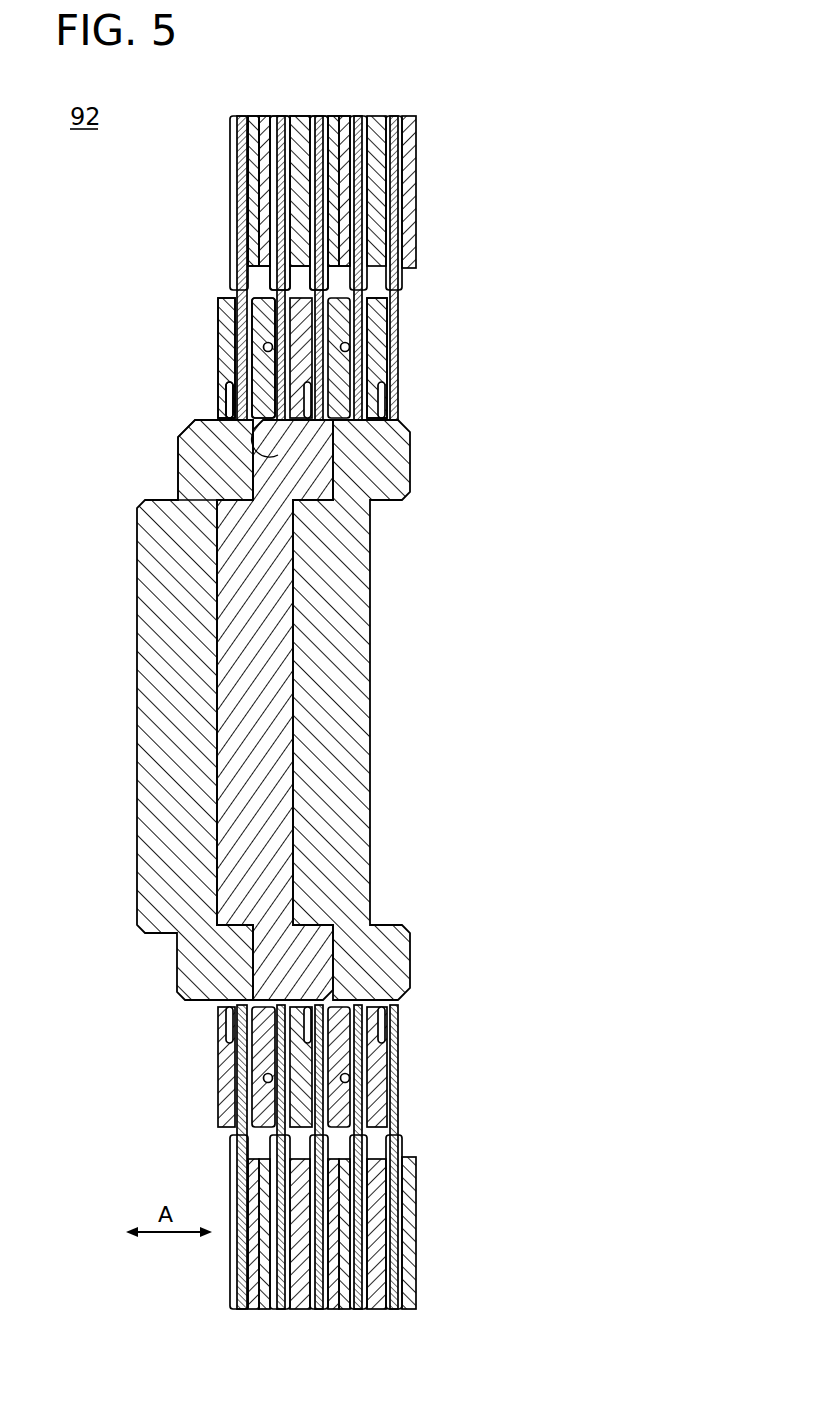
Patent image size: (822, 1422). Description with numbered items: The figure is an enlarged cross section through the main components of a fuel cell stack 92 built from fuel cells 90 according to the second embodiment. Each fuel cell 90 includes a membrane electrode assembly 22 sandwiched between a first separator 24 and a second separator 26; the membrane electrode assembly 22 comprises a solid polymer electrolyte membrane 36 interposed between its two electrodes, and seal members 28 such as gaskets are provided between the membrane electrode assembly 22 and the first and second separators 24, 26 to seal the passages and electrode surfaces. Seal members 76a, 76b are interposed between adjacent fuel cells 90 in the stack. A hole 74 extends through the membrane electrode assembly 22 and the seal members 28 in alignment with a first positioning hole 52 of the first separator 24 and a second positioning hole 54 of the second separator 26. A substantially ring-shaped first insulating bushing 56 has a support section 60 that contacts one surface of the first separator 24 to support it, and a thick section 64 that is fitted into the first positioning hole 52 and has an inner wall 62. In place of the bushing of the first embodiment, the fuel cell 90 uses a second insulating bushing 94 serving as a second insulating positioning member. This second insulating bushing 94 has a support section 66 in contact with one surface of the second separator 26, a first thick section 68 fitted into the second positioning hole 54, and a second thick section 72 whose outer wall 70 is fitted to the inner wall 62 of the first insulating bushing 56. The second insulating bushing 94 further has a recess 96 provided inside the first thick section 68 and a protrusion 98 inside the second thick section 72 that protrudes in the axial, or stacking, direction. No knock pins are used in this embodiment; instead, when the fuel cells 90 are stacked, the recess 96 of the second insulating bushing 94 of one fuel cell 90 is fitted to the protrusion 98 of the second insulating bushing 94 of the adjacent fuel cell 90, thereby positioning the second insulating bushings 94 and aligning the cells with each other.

The fuel cell 90 is at (360, 54).
The first separator 24 is at (282, 110).
The membrane electrode assembly 22 is at (301, 110).
The second separator 26 is at (322, 110).
The fuel cell stack 92 is at (276, 712).
The seal member 76a is at (262, 150).
The seal member 76b is at (272, 213).
The seal member 28 is at (284, 180).
The solid polymer electrolyte membrane 36 is at (310, 144).
The hole 74 is at (273, 290).
The support section 60 is at (236, 318).
The first insulating bushing 56 is at (260, 352).
The first positioning hole 52 is at (262, 380).
The thick section 64 is at (266, 398).
The support section 66 is at (332, 312).
The outer wall 70 is at (190, 424).
The second thick section 72 is at (190, 437).
The inner wall 62 is at (255, 462).
The first thick section 68 is at (335, 446).
The second positioning hole 54 is at (345, 482).
The second insulating bushing 94 is at (375, 585).
The recess 96 is at (237, 652).
The protrusion 98 is at (218, 620).